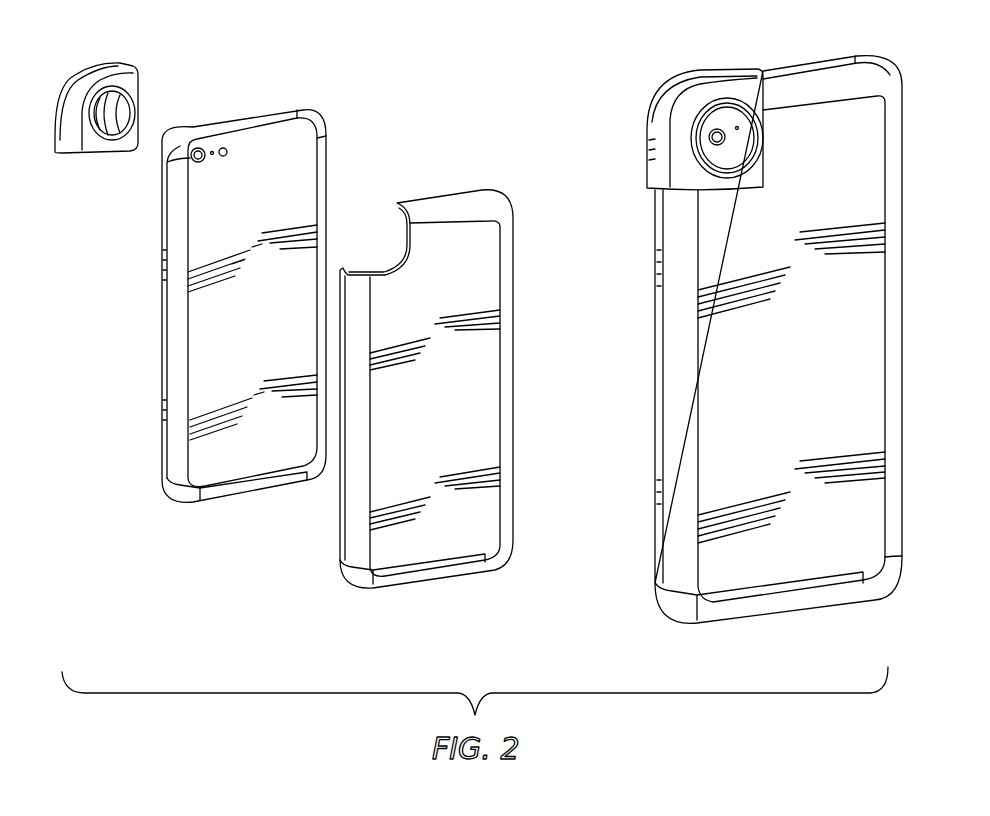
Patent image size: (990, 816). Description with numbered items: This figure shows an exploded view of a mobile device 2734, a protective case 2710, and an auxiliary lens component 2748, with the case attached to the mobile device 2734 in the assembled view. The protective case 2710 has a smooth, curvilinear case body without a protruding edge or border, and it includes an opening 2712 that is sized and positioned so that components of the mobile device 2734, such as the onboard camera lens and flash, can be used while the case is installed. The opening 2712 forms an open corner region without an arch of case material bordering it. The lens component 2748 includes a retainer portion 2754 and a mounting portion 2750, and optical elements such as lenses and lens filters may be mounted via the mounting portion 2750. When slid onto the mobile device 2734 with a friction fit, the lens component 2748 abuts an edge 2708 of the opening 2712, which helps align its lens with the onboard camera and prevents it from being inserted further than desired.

The mobile device 2734 is at (240, 115).
The opening 2712 is at (462, 373).
The edge 2708 is at (412, 247).
The protective case 2710 is at (485, 455).
The auxiliary lens component 2748 is at (781, 128).
The retainer portion 2754 is at (735, 87).
The mounting portion 2750 is at (763, 148).